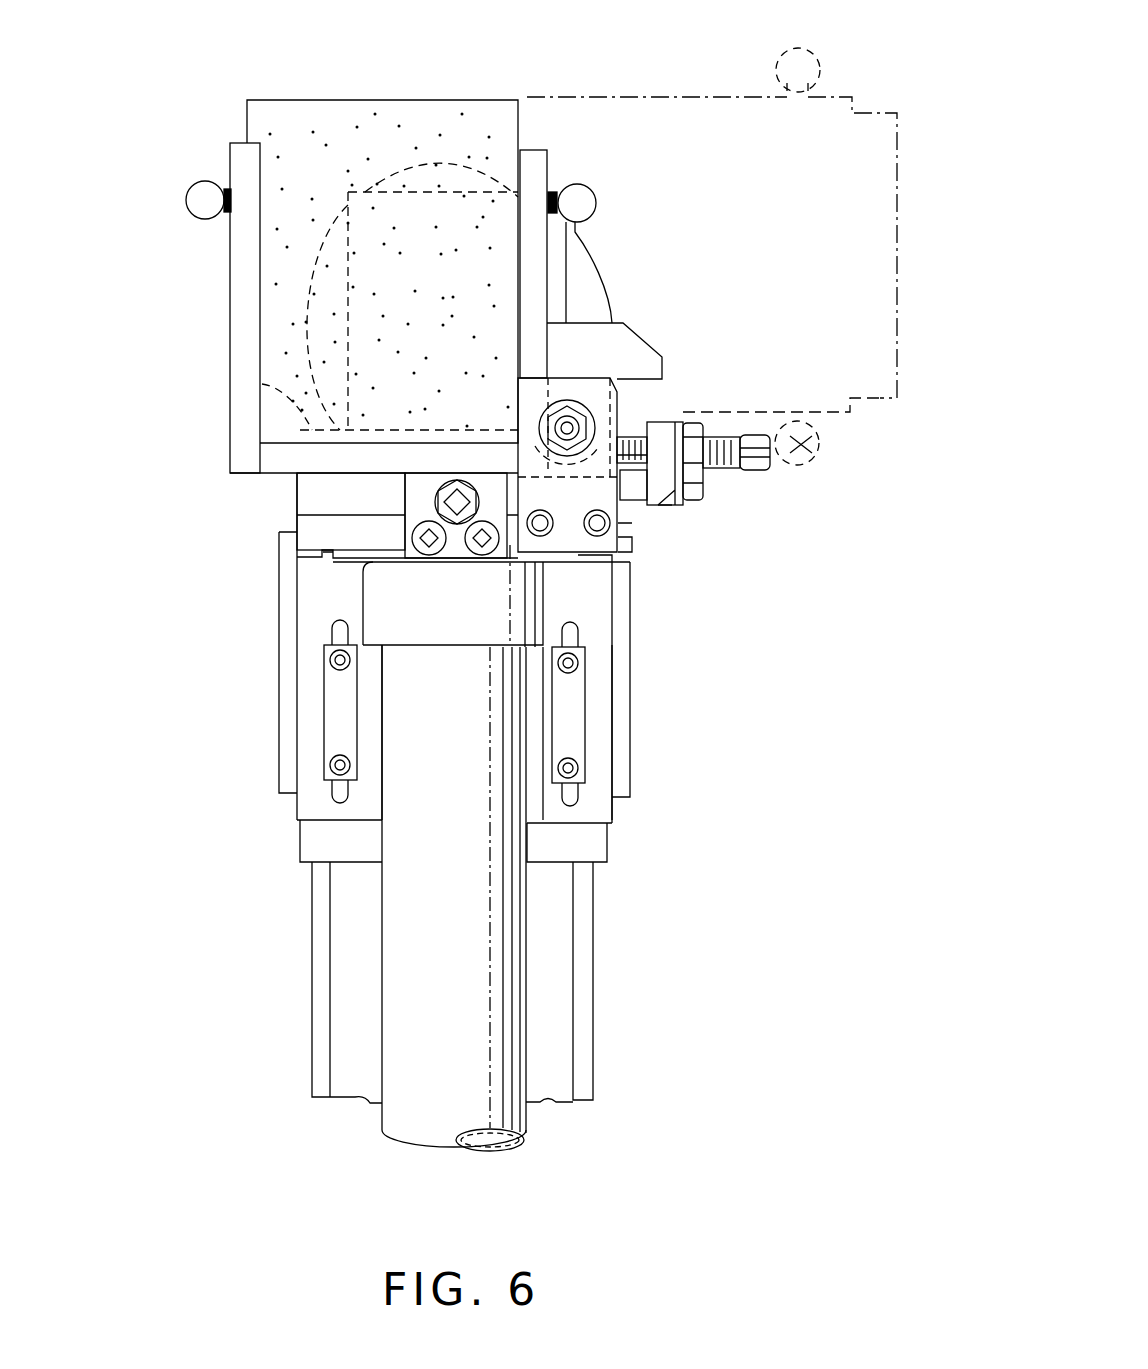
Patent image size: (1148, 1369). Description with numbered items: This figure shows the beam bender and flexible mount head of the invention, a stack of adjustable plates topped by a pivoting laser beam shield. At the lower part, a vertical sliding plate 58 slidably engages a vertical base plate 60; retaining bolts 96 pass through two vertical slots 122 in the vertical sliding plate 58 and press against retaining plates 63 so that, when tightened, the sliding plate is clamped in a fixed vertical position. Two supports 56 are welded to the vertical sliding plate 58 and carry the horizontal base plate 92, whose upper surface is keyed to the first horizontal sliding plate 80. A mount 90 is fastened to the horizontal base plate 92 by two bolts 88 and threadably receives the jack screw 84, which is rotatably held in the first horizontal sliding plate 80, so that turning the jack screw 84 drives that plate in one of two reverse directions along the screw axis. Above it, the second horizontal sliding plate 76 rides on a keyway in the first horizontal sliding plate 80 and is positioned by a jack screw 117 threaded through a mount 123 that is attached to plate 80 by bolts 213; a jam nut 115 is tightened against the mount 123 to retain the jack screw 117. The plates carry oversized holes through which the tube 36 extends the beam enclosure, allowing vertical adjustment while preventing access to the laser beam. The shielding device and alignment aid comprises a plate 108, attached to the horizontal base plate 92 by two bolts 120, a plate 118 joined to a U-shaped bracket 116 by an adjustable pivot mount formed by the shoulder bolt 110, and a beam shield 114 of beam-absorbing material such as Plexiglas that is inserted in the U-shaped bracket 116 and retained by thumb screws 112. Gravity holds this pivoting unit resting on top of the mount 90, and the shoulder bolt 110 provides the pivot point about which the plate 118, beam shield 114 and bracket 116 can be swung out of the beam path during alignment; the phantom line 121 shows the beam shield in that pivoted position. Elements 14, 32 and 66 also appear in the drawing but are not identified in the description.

The support post 14 is at (600, 257).
The cylinder 32 is at (557, 1027).
The tube 36 is at (475, 915).
The supports 56 is at (618, 775).
The vertical sliding plate 58 is at (600, 697).
The vertical base plate 60 is at (595, 842).
The retaining plates 63 is at (333, 698).
The guide rod 66 is at (320, 1035).
The second horizontal sliding plate 76 is at (230, 377).
The first horizontal sliding plate 80 is at (303, 485).
The jack screw 84 is at (445, 500).
The bolts 88 is at (478, 554).
The mount 90 is at (440, 490).
The horizontal base plate 92 is at (310, 542).
The retaining bolts 96 is at (340, 660).
The plate 108 is at (603, 412).
The shoulder bolt 110 is at (562, 424).
The thumb screws 112 is at (205, 198).
The beam shield 114 is at (357, 100).
The jam nut 115 is at (703, 427).
The U-shaped bracket 116 is at (242, 143).
The jack screw 117 is at (763, 464).
The plate 118 is at (620, 347).
The bolts 120 is at (545, 528).
The phantom line 121 is at (880, 402).
The vertical slots 122 is at (342, 630).
The mount 123 is at (672, 507).
The bolts 213 is at (703, 487).